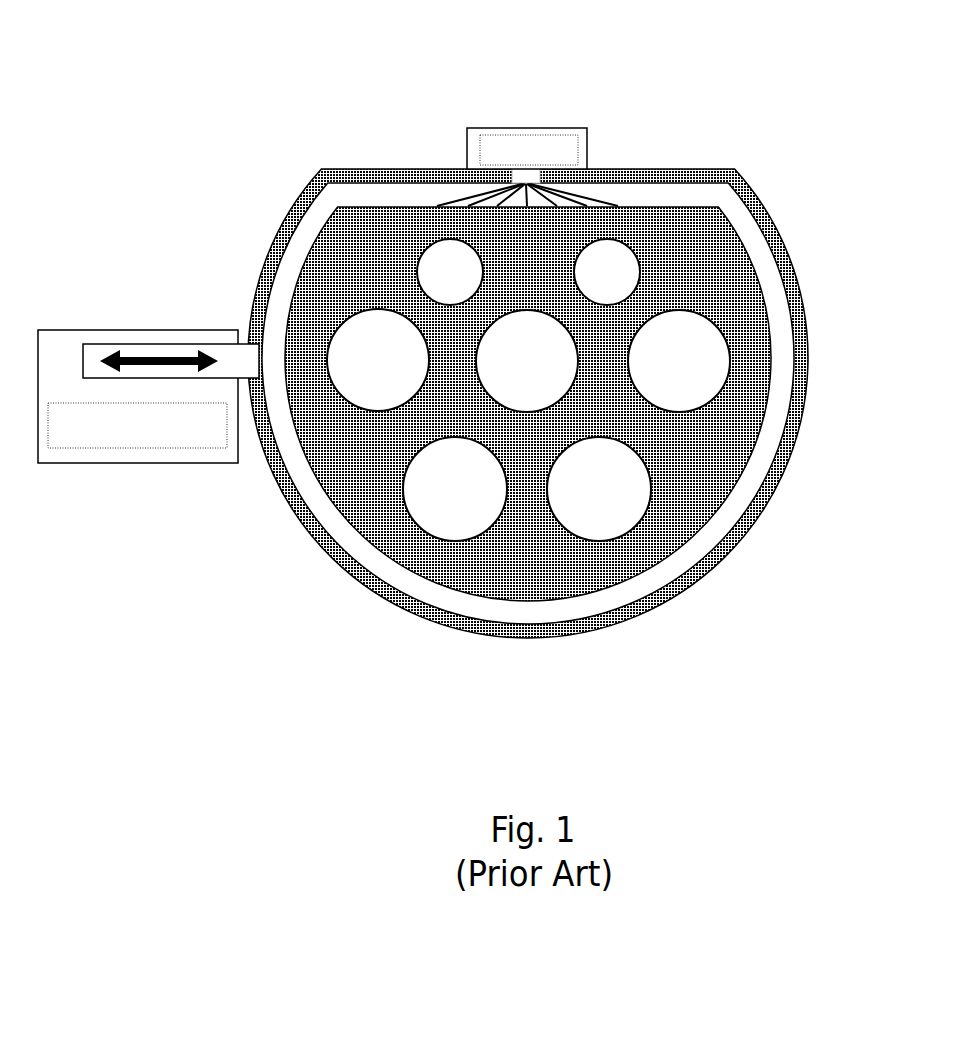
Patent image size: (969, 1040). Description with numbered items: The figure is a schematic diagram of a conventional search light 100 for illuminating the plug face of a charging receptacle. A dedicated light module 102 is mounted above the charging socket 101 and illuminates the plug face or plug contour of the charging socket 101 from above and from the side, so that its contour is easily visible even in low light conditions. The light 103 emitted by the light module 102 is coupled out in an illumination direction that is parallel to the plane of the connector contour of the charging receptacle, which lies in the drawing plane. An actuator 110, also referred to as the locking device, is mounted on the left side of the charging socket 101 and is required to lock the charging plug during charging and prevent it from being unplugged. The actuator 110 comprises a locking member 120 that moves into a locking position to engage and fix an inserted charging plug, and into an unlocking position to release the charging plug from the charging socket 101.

The search light 100 is at (423, 376).
The charging socket 101 is at (554, 648).
The light module 102 is at (552, 122).
The light 103 is at (604, 188).
The actuator 110 is at (131, 470).
The locking member 120 is at (109, 343).